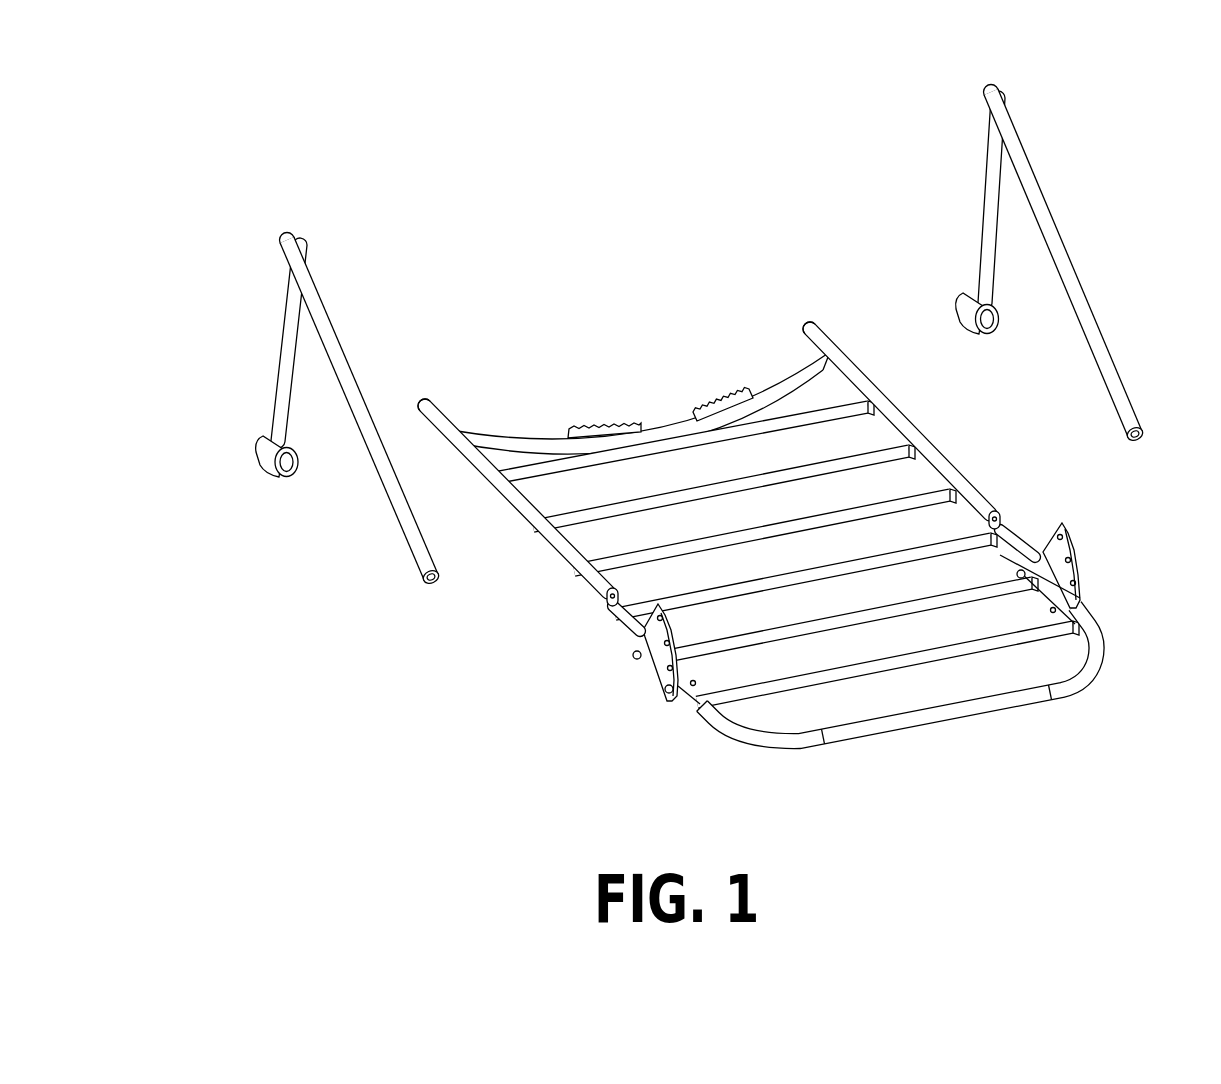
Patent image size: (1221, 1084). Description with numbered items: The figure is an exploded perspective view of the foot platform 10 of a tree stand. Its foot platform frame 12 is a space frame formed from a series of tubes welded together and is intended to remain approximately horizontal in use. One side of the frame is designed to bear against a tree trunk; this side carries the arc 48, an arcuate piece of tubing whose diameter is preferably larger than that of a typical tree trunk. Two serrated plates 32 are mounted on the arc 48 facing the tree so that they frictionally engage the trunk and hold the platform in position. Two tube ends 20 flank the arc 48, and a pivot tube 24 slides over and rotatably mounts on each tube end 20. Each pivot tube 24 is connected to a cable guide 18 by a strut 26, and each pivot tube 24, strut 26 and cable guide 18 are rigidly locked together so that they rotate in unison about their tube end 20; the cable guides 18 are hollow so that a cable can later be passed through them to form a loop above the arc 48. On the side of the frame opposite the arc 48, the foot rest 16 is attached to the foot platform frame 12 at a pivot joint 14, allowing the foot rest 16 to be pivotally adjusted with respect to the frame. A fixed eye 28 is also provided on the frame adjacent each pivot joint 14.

The foot platform 10 is at (685, 439).
The foot platform frame 12 is at (932, 458).
The pivot joint 14 is at (635, 656).
The foot rest 16 is at (1067, 683).
The cable guide 18 is at (398, 496).
The tube end 20 is at (436, 403).
The pivot tube 24 is at (284, 467).
The strut 26 is at (289, 318).
The fixed eye 28 is at (607, 593).
The serrated plate 32 is at (721, 405).
The toe loop 48 is at (519, 436).